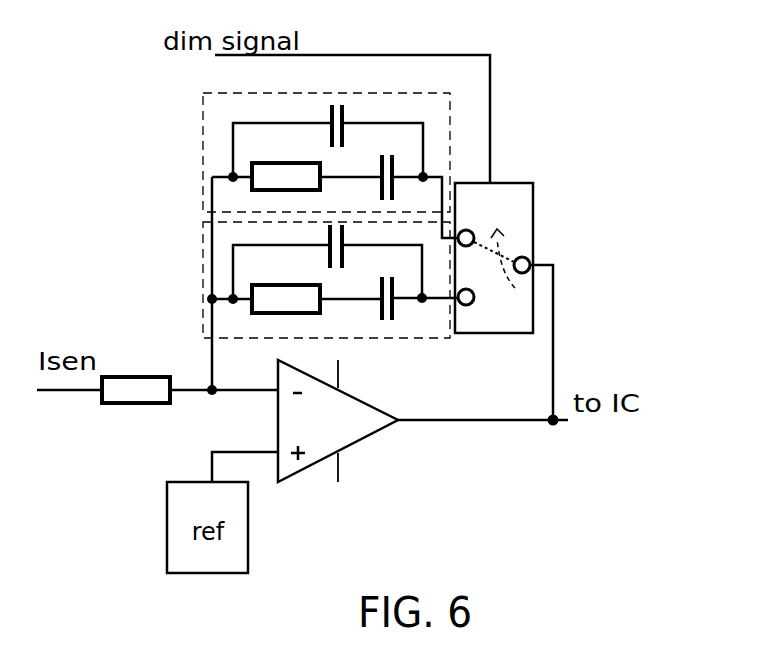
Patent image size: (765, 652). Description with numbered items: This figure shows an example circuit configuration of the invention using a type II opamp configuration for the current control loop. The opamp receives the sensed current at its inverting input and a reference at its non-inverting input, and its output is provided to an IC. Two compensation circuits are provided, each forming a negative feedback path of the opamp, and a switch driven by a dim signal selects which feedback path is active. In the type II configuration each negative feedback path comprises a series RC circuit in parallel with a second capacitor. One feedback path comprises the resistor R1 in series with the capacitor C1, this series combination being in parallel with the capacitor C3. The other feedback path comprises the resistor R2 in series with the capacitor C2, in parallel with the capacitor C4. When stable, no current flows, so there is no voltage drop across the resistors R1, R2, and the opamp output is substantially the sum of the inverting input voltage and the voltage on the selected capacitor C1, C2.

The capacitor C1 is at (420, 196).
The capacitor C2 is at (420, 308).
The second capacitor C3 is at (330, 141).
The second capacitor C4 is at (330, 263).
The resistor R1 is at (317, 190).
The resistor R2 is at (317, 313).